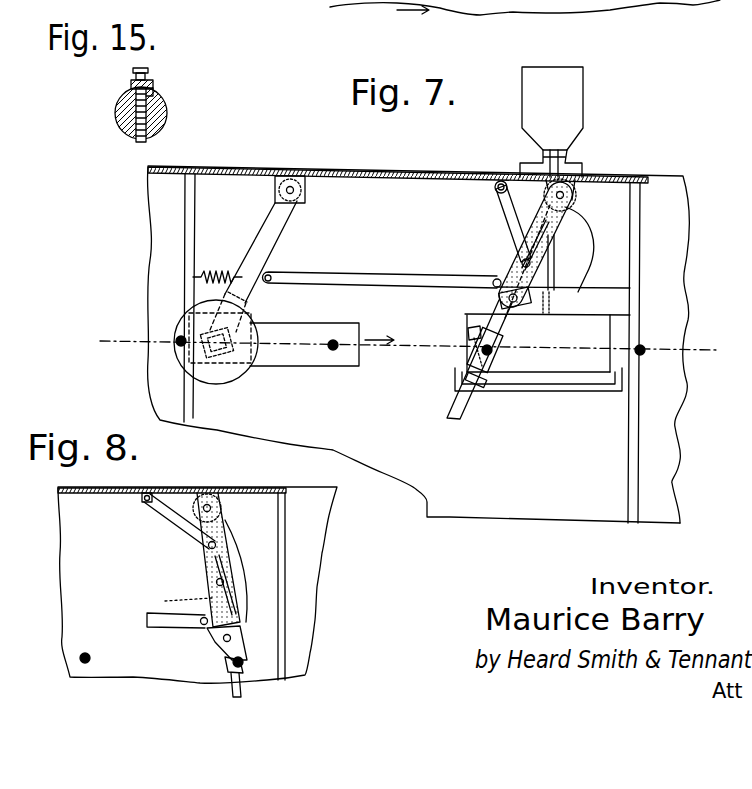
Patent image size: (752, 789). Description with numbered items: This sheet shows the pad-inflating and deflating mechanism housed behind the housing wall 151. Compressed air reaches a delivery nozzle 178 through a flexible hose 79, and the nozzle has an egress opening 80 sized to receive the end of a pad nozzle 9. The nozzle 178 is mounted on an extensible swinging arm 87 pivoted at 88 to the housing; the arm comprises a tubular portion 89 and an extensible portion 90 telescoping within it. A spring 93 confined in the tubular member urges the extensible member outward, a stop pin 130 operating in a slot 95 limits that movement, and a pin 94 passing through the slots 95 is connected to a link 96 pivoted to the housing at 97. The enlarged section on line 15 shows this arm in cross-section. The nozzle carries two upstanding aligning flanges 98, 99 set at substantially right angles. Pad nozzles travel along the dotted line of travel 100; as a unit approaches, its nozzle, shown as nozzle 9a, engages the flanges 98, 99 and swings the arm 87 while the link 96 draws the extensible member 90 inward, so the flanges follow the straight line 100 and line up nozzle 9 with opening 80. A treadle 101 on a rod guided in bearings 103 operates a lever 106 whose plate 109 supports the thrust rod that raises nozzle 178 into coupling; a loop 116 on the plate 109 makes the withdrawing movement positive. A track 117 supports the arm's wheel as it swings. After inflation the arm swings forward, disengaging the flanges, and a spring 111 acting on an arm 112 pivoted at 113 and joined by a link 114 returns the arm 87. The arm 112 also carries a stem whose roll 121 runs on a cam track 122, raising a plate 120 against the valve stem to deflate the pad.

In FIG. 7, the pad nozzle 9 is at (178, 337).
In FIG. 8, the pad nozzle 9 is at (86, 652).
In FIG. 7, the nozzle engaging the aligning flanges 9a is at (468, 345).
In FIG. 7, the section line 15— 15 is at (520, 262).
In FIG. 7, the flexible hose 79 is at (452, 418).
In FIG. 8, the flexible hose 79 is at (243, 693).
In FIG. 8, the egress opening 80 is at (224, 640).
In FIG. 7, the extensible swinging arm 87 is at (498, 340).
In FIG. 8, the extensible swinging arm 87 is at (247, 571).
In FIG. 7, the pivot 88 is at (564, 193).
In FIG. 8, the pivot 88 is at (212, 505).
In FIG. 15, the tubular portion 89 is at (118, 108).
In FIG. 7, the tubular portion 89 is at (546, 243).
In FIG. 8, the tubular portion 89 is at (201, 553).
In FIG. 15, the extensible portion 90 is at (130, 120).
In FIG. 7, the extensible portion 90 is at (506, 331).
In FIG. 8, the extensible portion 90 is at (177, 601).
In FIG. 7, the spring 93 is at (542, 222).
In FIG. 8, the spring 93 is at (205, 545).
In FIG. 15, the pin 94 is at (152, 82).
In FIG. 7, the pin 94 is at (519, 262).
In FIG. 8, the pin 94 is at (206, 548).
In FIG. 15, the slots 95 is at (153, 91).
In FIG. 7, the slots 95 is at (522, 264).
In FIG. 8, the slots 95 is at (214, 570).
In FIG. 15, the link 96 is at (131, 84).
In FIG. 7, the link 96 is at (497, 200).
In FIG. 8, the link 96 is at (165, 517).
In FIG. 7, the link pivot 97 is at (496, 189).
In FIG. 8, the link pivot 97 is at (143, 498).
In FIG. 7, the aligning flange 98 is at (492, 352).
In FIG. 8, the aligning flange 98 is at (239, 643).
In FIG. 7, the aligning flange 99 is at (470, 333).
In FIG. 8, the aligning flange 99 is at (206, 632).
In FIG. 7, the line of travel 100 is at (397, 345).
In FIG. 7, the treadle 101 is at (575, 103).
In FIG. 7, the bearings 103 is at (530, 168).
In FIG. 7, the lever 106 is at (551, 261).
In FIG. 7, the plate 109 is at (592, 362).
In FIG. 7, the spring 111 is at (214, 270).
In FIG. 7, the arm 112 is at (270, 245).
In FIG. 7, the pivot 113 is at (290, 186).
In FIG. 7, the link 114 is at (382, 276).
In FIG. 8, the link 114 is at (145, 617).
In FIG. 7, the loop 116 is at (562, 380).
In FIG. 7, the track 117 is at (620, 301).
In FIG. 7, the plate 120 is at (218, 370).
In FIG. 7, the roll 121 is at (232, 354).
In FIG. 7, the track 122 is at (304, 360).
In FIG. 7, the stop pin 130 is at (507, 300).
In FIG. 8, the stop pin 130 is at (216, 584).
In FIG. 7, the housing wall 151 is at (392, 171).
In FIG. 8, the housing wall 151 is at (178, 489).
In FIG. 7, the delivery nozzle 178 is at (481, 381).
In FIG. 8, the delivery nozzle 178 is at (226, 662).